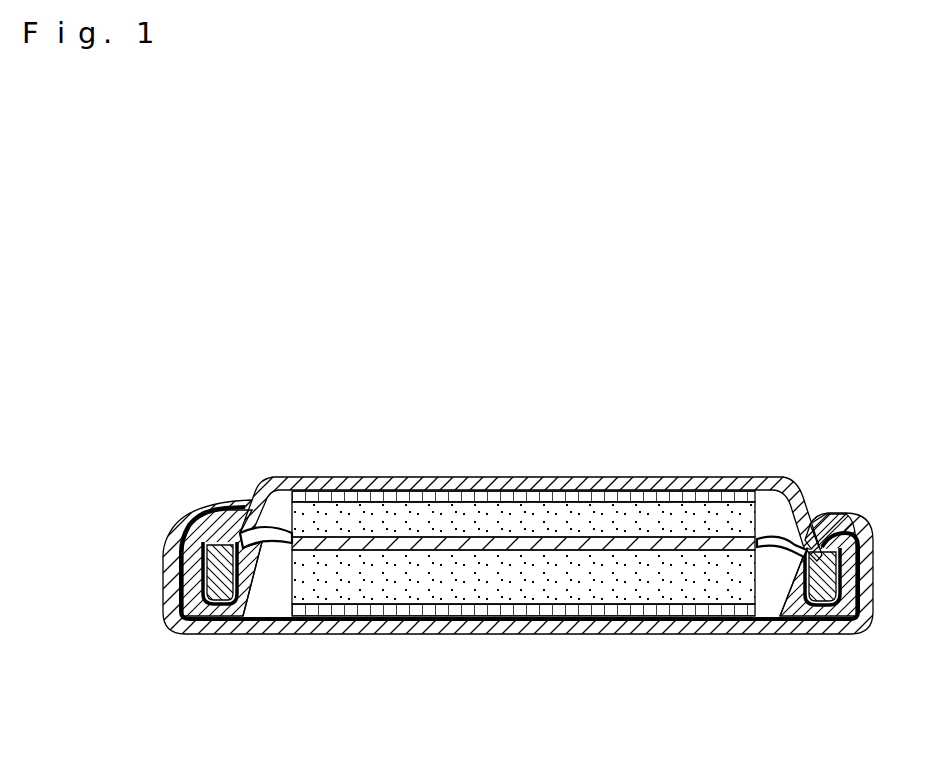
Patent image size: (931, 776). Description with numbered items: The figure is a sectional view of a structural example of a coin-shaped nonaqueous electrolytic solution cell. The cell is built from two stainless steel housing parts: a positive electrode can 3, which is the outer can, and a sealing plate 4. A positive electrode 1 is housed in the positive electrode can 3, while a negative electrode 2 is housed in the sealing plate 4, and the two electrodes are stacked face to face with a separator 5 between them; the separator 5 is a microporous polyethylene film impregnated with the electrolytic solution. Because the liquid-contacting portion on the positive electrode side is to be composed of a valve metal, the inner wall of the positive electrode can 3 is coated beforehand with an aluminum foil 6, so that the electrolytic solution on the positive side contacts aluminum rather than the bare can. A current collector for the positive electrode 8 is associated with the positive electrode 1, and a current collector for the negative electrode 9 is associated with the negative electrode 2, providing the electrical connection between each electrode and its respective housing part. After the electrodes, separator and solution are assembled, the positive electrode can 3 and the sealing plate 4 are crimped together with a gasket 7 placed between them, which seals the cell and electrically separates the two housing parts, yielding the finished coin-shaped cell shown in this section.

The positive electrode 1 is at (677, 583).
The negative electrode 2 is at (638, 513).
The positive electrode can 3 is at (553, 635).
The sealing plate 4 is at (483, 490).
The separator 5 is at (382, 542).
The aluminum foil 6 is at (435, 630).
The gasket 7 is at (817, 510).
The current collector for the positive electrode 8 is at (332, 616).
The current collector for the negative electrode 9 is at (312, 495).